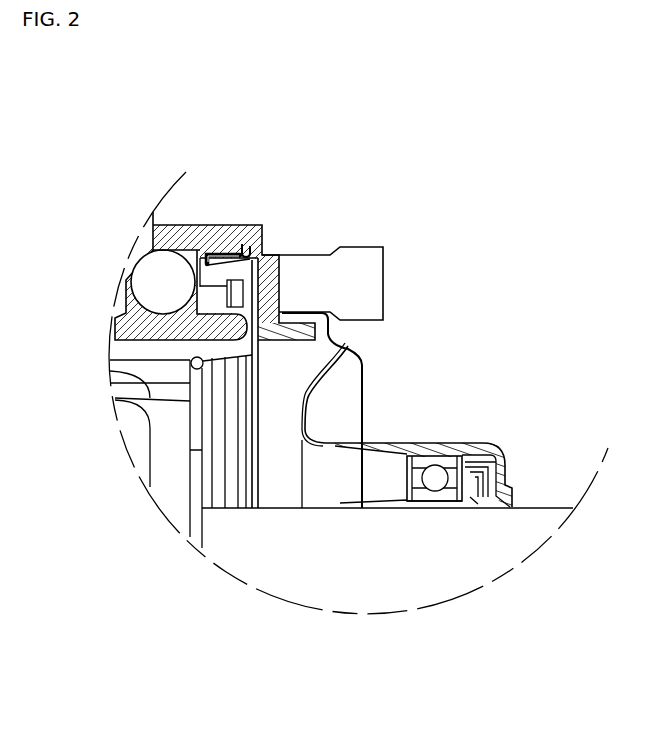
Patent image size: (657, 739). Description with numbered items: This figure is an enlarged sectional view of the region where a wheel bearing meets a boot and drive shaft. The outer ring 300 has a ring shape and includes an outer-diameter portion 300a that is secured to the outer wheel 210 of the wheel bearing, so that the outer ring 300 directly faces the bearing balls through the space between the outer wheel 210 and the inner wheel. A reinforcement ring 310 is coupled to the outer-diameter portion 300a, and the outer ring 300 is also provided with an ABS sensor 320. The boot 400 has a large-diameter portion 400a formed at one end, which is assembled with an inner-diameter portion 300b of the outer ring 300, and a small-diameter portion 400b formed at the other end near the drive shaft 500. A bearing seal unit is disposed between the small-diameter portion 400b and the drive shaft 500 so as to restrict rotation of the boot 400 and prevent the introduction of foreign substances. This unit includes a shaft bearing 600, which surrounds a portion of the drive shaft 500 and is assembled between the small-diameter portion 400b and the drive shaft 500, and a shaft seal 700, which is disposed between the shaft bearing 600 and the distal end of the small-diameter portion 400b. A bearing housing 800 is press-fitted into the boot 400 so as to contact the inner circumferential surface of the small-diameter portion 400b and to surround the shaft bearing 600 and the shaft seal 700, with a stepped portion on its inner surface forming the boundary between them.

The outer wheel 210 is at (133, 243).
The outer ring 300 is at (252, 248).
The outer-diameter portion 300a is at (208, 250).
The inner-diameter portion 300b is at (268, 330).
The reinforcement ring 310 is at (243, 244).
The ABS sensor 320 is at (330, 276).
The boot 400 is at (335, 450).
The large-diameter portion 400a is at (290, 345).
The small-diameter portion 400b is at (479, 443).
The drive shaft 500 is at (403, 578).
The shaft bearing 600 is at (437, 500).
The shaft seal 700 is at (483, 500).
The bearing housing 800 is at (428, 455).